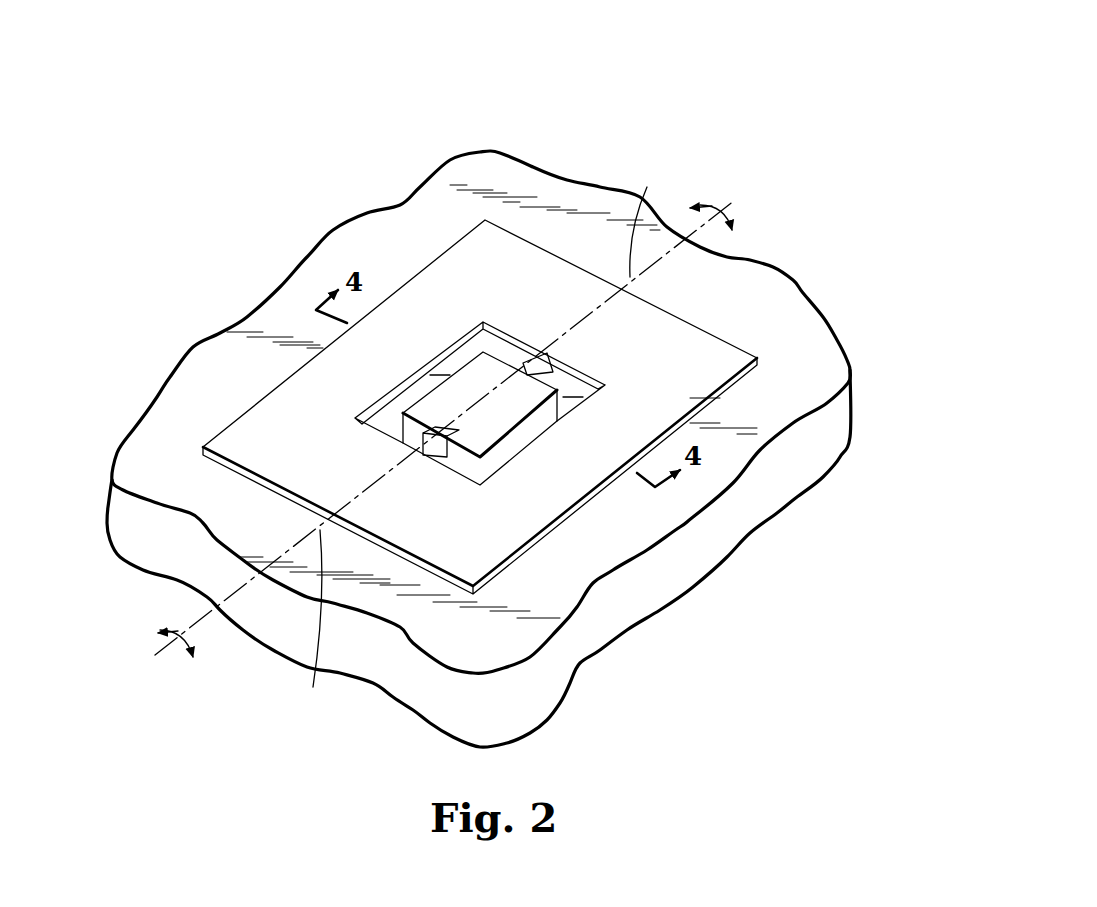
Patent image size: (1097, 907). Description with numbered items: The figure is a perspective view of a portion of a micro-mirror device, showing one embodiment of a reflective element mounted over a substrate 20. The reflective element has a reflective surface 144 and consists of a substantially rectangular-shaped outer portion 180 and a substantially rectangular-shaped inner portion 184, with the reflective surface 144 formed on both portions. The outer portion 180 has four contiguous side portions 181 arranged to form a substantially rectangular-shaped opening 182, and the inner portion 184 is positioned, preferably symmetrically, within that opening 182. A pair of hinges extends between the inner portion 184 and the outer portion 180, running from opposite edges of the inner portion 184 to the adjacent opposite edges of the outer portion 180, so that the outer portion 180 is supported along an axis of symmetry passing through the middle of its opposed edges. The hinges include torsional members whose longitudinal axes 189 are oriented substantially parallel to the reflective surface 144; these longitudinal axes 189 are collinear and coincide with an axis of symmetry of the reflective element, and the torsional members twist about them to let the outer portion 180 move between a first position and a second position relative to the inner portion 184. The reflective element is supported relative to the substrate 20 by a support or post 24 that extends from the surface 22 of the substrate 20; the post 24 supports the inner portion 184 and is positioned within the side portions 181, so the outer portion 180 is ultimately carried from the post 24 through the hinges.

The substrate 20 is at (833, 423).
The surface 22 is at (820, 343).
The support or post 24 is at (500, 460).
The reflective surface 144 is at (720, 350).
The outer portion 180 is at (547, 275).
The side portions 181 is at (663, 313).
The opening 182 is at (497, 345).
The inner portion 184 is at (470, 382).
The longitudinal axes 189 is at (484, 440).